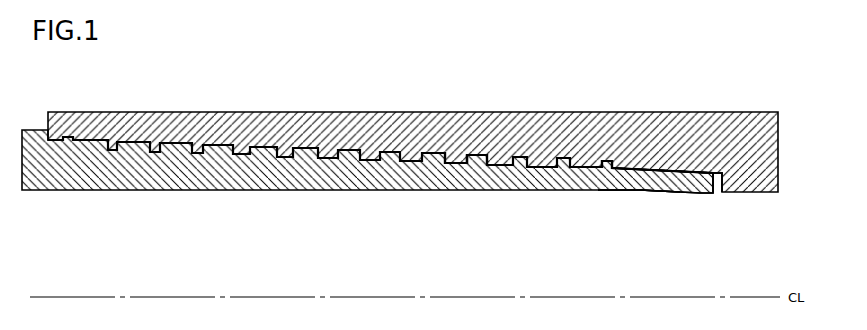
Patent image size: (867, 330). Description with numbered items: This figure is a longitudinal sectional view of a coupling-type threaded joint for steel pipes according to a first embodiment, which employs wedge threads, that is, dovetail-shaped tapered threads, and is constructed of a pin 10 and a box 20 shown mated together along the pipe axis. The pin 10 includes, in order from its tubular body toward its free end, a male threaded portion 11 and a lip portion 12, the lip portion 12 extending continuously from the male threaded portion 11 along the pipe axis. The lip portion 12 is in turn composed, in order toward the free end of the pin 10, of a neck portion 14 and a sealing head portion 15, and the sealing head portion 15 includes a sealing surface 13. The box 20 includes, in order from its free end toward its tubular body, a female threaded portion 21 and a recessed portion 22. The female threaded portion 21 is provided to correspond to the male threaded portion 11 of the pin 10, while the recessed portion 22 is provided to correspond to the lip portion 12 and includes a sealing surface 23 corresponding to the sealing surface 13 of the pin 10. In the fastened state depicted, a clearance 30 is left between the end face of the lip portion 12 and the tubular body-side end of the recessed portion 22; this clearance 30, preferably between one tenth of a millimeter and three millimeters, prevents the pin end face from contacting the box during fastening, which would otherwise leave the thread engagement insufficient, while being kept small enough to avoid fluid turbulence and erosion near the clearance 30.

The pin 10 is at (87, 197).
The male threaded portion 11 is at (478, 165).
The lip portion 12 is at (657, 251).
The sealing surface 13 is at (680, 193).
The neck portion 14 is at (617, 190).
The sealing head portion 15 is at (672, 192).
The box 20 is at (737, 106).
The female threaded portion 21 is at (458, 154).
The recessed portion 22 is at (625, 168).
The sealing surface 23 is at (682, 172).
The clearance 30 is at (718, 193).